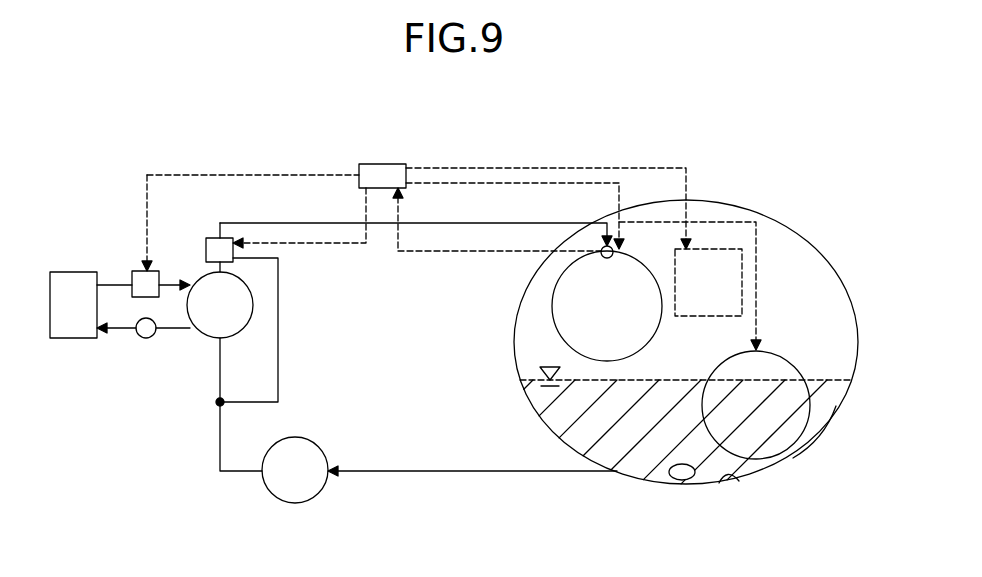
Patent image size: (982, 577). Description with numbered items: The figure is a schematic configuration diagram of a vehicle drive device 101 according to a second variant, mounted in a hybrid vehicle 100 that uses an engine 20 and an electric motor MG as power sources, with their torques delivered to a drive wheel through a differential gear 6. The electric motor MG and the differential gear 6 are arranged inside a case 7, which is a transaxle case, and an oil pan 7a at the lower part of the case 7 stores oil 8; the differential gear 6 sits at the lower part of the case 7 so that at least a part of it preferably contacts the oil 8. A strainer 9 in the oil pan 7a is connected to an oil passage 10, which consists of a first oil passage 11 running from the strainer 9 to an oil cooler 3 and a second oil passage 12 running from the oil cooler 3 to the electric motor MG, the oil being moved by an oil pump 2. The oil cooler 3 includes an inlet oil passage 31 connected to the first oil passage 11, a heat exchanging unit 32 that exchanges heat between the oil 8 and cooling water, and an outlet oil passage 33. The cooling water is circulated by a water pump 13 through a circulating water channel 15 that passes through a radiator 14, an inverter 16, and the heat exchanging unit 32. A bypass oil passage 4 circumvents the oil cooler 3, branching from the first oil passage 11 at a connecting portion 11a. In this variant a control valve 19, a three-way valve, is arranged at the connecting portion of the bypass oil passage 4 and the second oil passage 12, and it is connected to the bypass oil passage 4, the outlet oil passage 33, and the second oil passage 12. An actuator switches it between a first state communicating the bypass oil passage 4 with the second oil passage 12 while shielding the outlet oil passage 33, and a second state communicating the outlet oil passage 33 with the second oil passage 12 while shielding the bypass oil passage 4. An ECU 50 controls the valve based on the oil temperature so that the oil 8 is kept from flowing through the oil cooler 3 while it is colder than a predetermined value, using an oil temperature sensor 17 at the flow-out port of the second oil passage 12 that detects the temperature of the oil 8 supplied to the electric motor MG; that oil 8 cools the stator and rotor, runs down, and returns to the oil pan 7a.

The vehicle 100 is at (118, 112).
The vehicle drive device 101 is at (208, 164).
The ECU 50 is at (381, 163).
The radiator 14 is at (72, 272).
The circulating water channel 15 is at (114, 283).
The inverter 16 is at (157, 271).
The water pump 13 is at (146, 339).
The control valve 19 is at (206, 250).
The oil cooler 3 is at (332, 283).
The bypass oil passage 4 is at (279, 268).
The outlet oil passage 33 is at (226, 268).
The heat exchanging unit 32 is at (252, 305).
The inlet oil passage 31 is at (220, 348).
The connecting portion 11a is at (216, 405).
The oil passage 10 is at (450, 292).
The second oil passage 12 is at (436, 224).
The first oil passage 11 is at (437, 470).
The oil pump 2 is at (293, 505).
The oil temperature sensor 17 is at (606, 257).
The case 7 is at (722, 201).
The oil pan 7a is at (736, 481).
The oil 8 is at (680, 379).
The electric motor MG is at (565, 341).
The engine 20 is at (708, 317).
The differential gear 6 is at (778, 349).
The strainer 9 is at (688, 481).